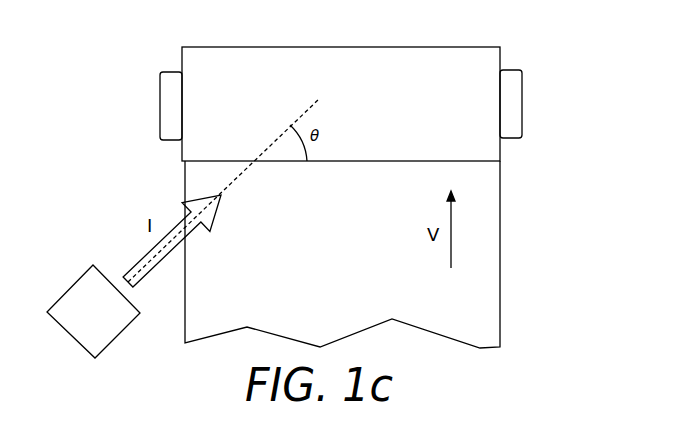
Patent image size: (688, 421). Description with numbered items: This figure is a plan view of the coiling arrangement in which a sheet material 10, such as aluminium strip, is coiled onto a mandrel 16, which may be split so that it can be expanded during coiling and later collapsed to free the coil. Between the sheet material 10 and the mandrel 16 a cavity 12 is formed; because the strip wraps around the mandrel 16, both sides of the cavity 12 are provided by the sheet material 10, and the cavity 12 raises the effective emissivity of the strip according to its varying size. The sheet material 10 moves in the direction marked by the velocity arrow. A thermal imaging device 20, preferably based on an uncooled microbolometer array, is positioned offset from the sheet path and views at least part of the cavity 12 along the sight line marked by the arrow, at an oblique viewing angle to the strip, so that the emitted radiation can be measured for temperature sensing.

The sheet material 10 is at (350, 281).
The cavity 12 is at (468, 162).
The mandrel 16 is at (522, 103).
The thermal imaging device 20 is at (105, 321).